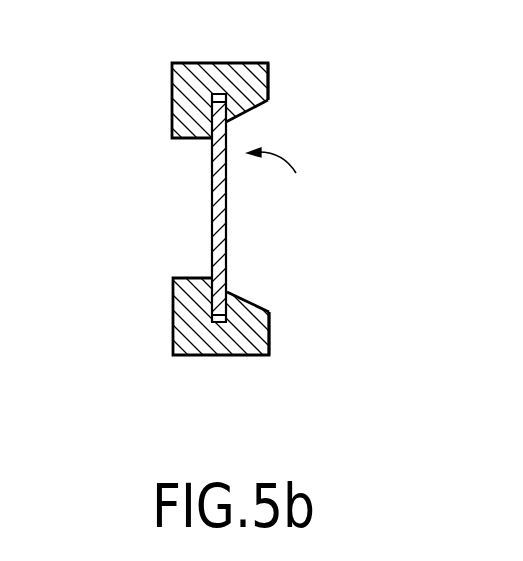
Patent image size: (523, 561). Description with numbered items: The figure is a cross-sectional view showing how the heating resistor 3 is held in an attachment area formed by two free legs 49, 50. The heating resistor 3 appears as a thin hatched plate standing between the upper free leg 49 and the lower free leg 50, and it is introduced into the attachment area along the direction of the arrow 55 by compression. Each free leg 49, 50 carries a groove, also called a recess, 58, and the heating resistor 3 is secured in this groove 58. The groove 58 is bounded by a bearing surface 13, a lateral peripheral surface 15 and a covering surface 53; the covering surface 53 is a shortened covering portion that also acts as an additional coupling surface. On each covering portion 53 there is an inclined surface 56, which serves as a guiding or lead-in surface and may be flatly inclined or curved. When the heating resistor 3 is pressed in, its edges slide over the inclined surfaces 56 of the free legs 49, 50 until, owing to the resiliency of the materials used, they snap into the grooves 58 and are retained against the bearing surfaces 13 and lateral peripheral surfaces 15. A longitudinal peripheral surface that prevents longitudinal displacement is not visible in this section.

The bearing surface 13 is at (208, 102).
The lateral peripheral surface 15 is at (218, 94).
The groove 58 is at (217, 93).
The free leg 49 is at (268, 63).
The covering surface 53 is at (268, 91).
The inclined surface 56 is at (242, 113).
The arrow 55 is at (281, 178).
The heating resistor 3 is at (228, 227).
The free leg 50 is at (269, 355).